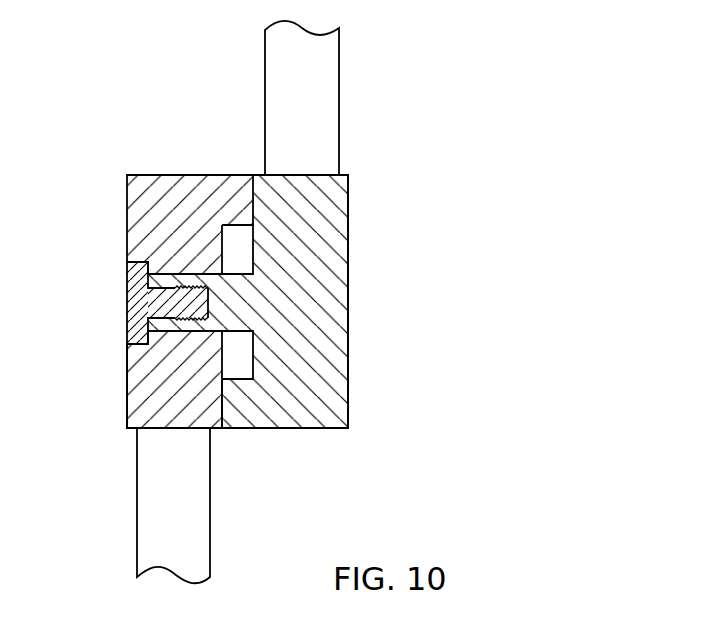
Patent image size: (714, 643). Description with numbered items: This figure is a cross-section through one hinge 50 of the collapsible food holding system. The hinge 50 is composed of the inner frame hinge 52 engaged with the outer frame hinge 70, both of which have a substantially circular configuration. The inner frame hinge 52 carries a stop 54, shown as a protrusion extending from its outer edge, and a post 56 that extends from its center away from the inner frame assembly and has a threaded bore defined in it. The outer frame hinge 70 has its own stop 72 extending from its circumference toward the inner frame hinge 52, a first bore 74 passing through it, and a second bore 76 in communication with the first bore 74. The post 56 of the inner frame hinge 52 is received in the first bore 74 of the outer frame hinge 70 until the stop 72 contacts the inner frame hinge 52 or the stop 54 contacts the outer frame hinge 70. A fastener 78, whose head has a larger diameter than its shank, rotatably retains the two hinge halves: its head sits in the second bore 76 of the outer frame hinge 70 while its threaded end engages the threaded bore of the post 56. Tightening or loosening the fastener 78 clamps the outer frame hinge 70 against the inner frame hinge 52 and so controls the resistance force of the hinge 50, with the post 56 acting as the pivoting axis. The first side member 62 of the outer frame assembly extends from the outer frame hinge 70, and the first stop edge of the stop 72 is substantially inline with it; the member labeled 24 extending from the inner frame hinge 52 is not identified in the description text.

The upper tube 24 is at (339, 60).
The hinge 50 is at (462, 147).
The inner frame hinge 52 is at (348, 228).
The stop 54 is at (238, 422).
The post 56 is at (127, 368).
The first side member 62 is at (137, 549).
The outer frame hinge 70 is at (127, 212).
The stop 72 is at (233, 183).
The first bore 74 is at (157, 273).
The second bore 76 is at (127, 343).
The fastener 78 is at (130, 294).